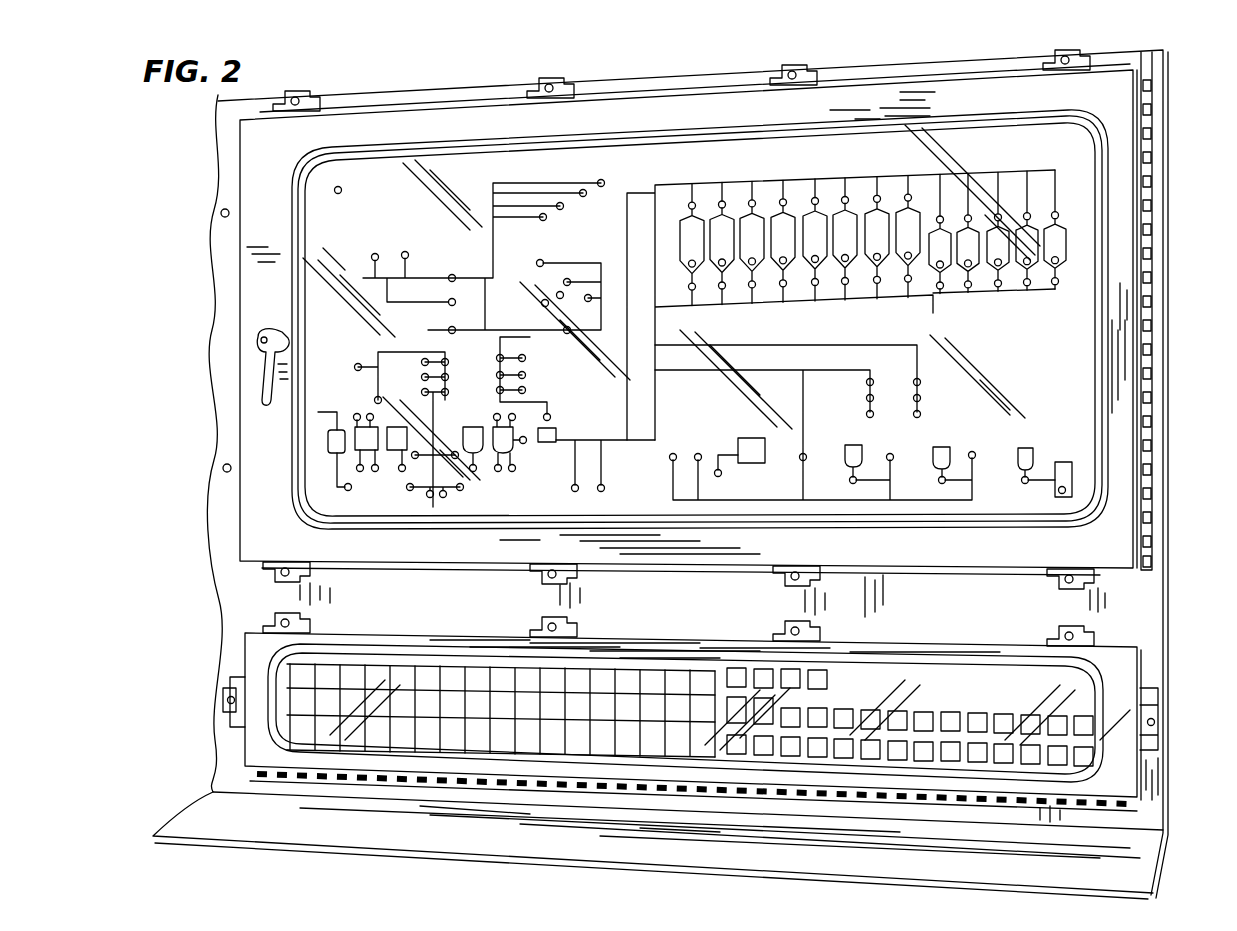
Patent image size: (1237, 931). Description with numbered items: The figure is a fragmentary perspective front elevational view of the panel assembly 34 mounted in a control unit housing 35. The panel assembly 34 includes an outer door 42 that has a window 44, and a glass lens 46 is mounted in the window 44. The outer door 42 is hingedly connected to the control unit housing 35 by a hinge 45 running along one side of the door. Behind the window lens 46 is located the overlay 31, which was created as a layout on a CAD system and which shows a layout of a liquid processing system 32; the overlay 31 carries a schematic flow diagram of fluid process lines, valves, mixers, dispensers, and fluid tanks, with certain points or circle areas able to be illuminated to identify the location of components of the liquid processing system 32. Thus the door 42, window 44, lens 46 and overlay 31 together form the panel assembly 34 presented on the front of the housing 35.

The overlay 31 is at (1050, 378).
The liquid processing system 32 is at (610, 247).
The panel assembly 34 is at (1138, 578).
The control unit housing 35 is at (1175, 680).
The outer door 42 is at (252, 282).
The window 44 is at (372, 163).
The hinge 45 is at (1152, 203).
The glass lens 46 is at (445, 166).